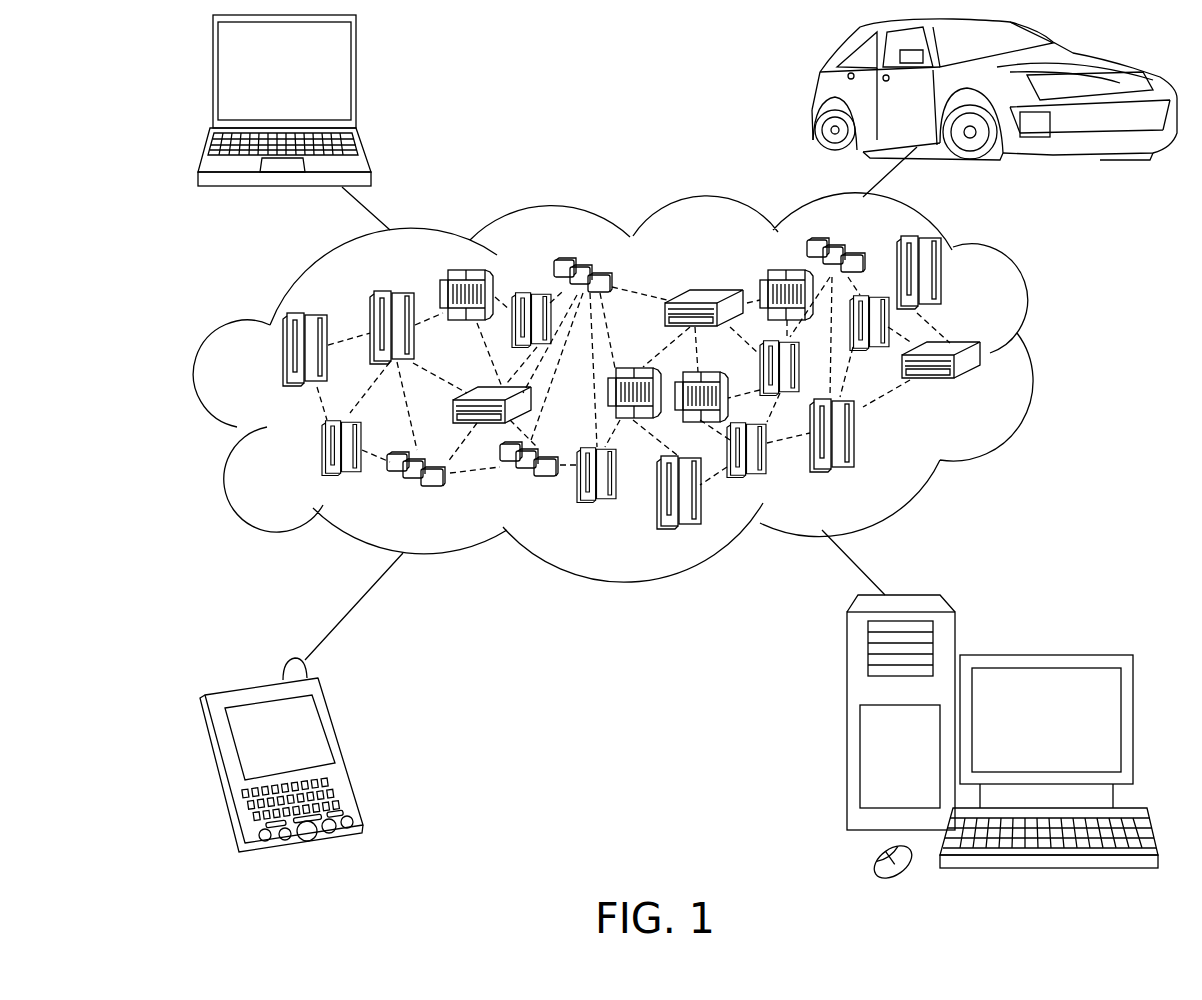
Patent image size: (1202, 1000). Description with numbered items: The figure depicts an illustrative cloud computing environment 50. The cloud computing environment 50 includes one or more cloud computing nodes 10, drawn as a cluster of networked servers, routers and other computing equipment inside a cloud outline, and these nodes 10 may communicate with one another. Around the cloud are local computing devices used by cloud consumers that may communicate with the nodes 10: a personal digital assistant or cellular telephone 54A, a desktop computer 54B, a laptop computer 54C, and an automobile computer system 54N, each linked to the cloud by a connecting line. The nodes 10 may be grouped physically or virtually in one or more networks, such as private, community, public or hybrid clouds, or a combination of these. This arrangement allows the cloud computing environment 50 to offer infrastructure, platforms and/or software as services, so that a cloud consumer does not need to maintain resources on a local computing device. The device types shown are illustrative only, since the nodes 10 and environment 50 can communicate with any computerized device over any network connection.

The cloud computing environment 50 is at (1045, 358).
The cloud computing nodes 10 is at (985, 390).
The personal digital assistant or cellular telephone 54A is at (345, 752).
The desktop computer 54B is at (1043, 655).
The laptop computer 54C is at (356, 80).
The automobile computer system 54N is at (812, 96).